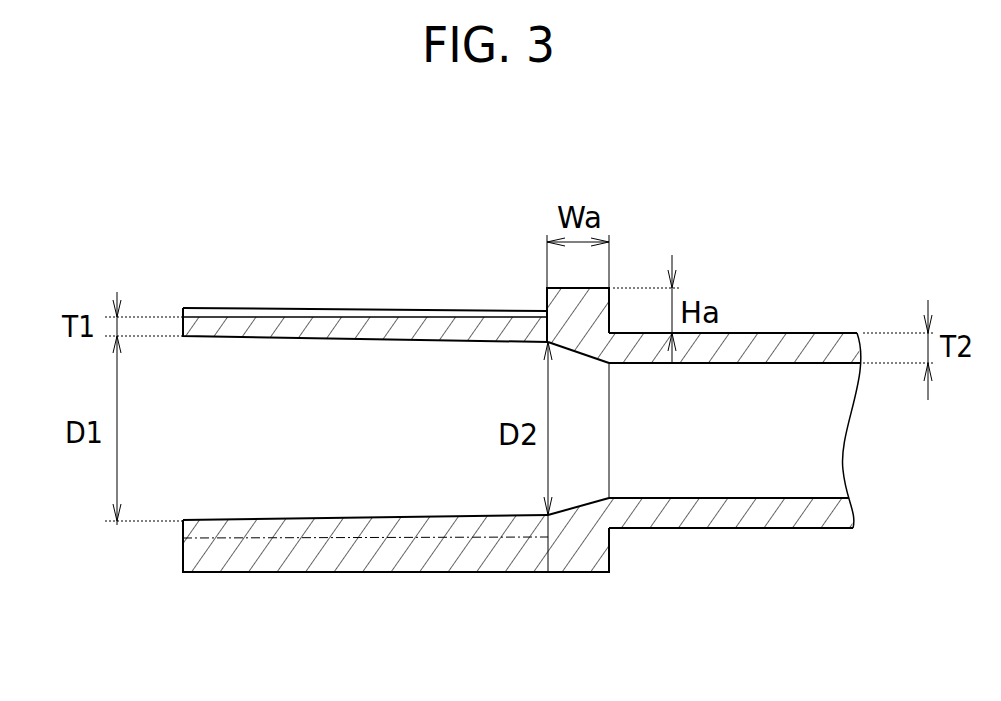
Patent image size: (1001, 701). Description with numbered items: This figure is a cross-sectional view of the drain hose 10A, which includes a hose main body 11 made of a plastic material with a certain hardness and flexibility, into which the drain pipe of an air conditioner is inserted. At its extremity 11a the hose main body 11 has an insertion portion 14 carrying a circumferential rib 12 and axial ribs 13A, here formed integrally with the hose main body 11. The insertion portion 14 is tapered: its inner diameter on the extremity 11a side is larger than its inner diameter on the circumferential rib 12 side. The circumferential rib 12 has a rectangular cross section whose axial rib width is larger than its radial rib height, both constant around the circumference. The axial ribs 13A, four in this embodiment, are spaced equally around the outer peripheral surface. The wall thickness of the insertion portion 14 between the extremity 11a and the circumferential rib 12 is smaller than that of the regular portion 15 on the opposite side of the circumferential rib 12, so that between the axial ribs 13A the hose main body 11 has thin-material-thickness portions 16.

The drain hose 10A is at (515, 419).
The hose main body 11 is at (777, 475).
The extremity 11a is at (183, 537).
The circumferential rib 12 is at (577, 573).
The axial ribs 13A is at (422, 310).
The insertion portion 14 is at (659, 611).
The regular portion 15 is at (748, 530).
The thin-material-thickness portions 16 is at (299, 325).